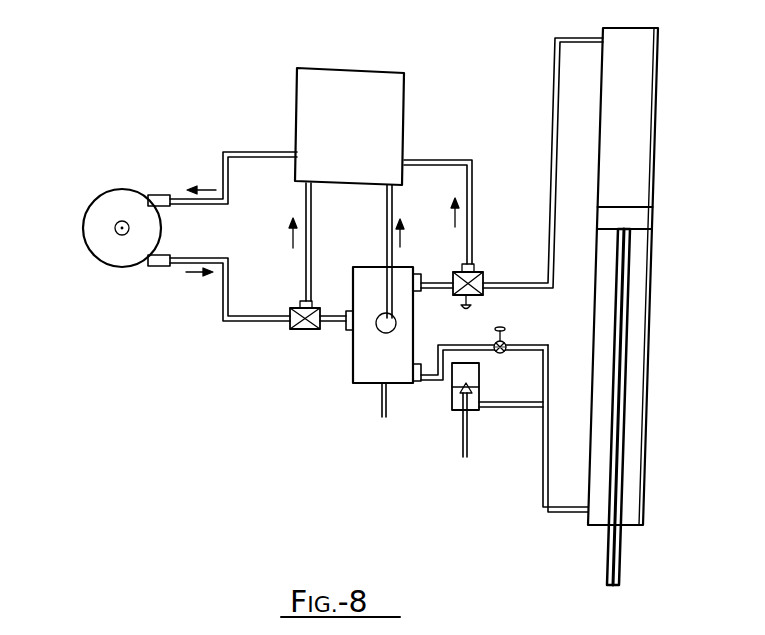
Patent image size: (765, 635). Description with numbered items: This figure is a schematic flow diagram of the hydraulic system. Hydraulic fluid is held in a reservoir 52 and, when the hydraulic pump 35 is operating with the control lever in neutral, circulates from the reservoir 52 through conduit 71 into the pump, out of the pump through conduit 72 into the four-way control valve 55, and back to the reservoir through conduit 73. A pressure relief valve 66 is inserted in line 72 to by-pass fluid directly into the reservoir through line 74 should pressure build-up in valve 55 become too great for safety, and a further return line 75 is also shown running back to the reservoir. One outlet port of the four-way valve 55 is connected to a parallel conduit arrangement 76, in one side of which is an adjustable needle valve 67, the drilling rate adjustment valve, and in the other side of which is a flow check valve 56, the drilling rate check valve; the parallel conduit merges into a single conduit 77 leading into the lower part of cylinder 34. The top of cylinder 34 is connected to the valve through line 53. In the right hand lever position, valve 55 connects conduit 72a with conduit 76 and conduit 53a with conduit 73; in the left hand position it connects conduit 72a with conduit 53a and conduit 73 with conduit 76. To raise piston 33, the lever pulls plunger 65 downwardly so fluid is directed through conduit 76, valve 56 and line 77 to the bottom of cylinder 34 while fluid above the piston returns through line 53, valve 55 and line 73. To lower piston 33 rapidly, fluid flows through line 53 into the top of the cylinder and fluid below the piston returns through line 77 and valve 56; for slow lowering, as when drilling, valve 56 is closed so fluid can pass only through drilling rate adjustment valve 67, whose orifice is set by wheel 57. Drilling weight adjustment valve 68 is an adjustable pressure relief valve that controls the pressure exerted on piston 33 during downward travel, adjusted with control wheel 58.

The piston 33 is at (653, 219).
The cylinder 34 is at (659, 106).
The hydraulic pump 35 is at (101, 199).
The reservoir 52 is at (348, 53).
The line 53 is at (554, 66).
The conduit 53a is at (428, 281).
The four-way control valve 55 is at (353, 371).
The flow check valve 56 is at (470, 431).
The wheel 57 is at (500, 329).
The control wheel 58 is at (466, 309).
The plunger 65 is at (388, 412).
The pressure relief valve 66 is at (290, 325).
The adjustable needle valve 67 is at (499, 352).
The drilling weight adjustment valve 68 is at (484, 272).
The conduit 71 is at (263, 148).
The conduit 72 is at (226, 297).
The conduit 72a is at (329, 316).
The conduit 73 is at (394, 203).
The line 74 is at (313, 203).
The return line 75 is at (474, 208).
The parallel conduit arrangement 76 is at (427, 372).
The conduit 77 is at (545, 479).